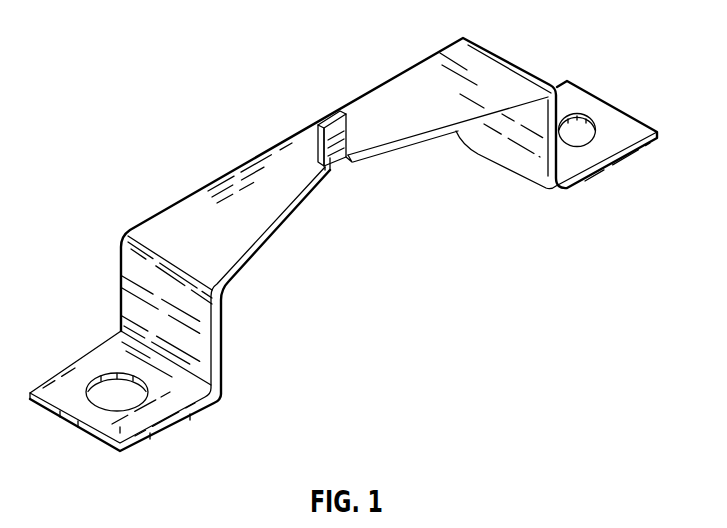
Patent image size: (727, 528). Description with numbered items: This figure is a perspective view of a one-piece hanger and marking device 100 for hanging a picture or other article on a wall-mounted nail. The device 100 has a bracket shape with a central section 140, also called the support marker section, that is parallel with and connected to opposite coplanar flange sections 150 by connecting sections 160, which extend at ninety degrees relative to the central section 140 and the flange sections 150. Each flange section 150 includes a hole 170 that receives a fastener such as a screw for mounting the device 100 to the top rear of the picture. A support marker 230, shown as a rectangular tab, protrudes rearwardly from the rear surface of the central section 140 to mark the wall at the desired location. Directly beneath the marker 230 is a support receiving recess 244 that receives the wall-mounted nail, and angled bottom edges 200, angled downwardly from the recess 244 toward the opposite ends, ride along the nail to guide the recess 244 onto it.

The one-piece hanger and marking device 100 is at (165, 35).
The central section 140 is at (198, 178).
The flange sections 150 is at (163, 441).
The connecting sections 160 is at (219, 330).
The holes 170 is at (102, 390).
The angled bottom edges 200 is at (297, 212).
The support marker 230 is at (306, 133).
The support receiving recess 244 is at (340, 164).